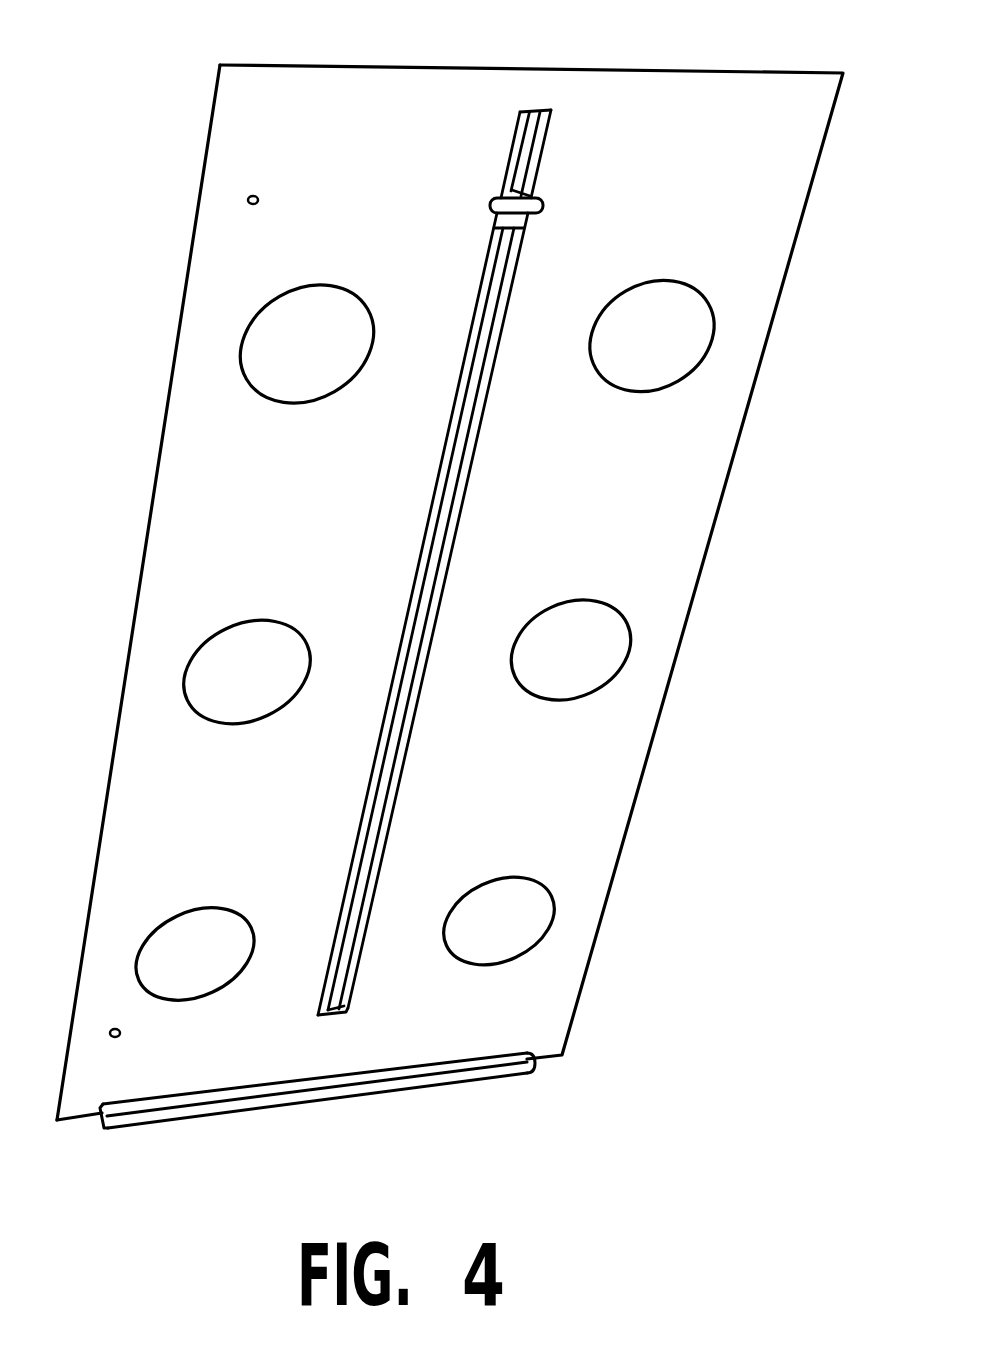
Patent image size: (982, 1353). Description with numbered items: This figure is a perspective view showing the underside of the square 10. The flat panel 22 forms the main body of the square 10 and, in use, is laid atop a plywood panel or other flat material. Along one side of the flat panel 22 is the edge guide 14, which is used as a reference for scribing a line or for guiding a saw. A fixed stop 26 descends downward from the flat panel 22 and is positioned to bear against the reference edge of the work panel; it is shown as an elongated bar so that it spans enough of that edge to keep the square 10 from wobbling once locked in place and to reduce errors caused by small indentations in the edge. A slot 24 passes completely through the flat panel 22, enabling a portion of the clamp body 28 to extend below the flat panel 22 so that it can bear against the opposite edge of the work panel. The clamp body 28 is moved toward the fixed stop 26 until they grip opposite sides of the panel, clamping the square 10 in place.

The square 10 is at (455, 592).
The edge guide 14 is at (138, 592).
The flat panel 22 is at (450, 569).
The slot 24 is at (434, 562).
The fixed stop 26 is at (330, 1118).
The clamp body 28 is at (439, 106).